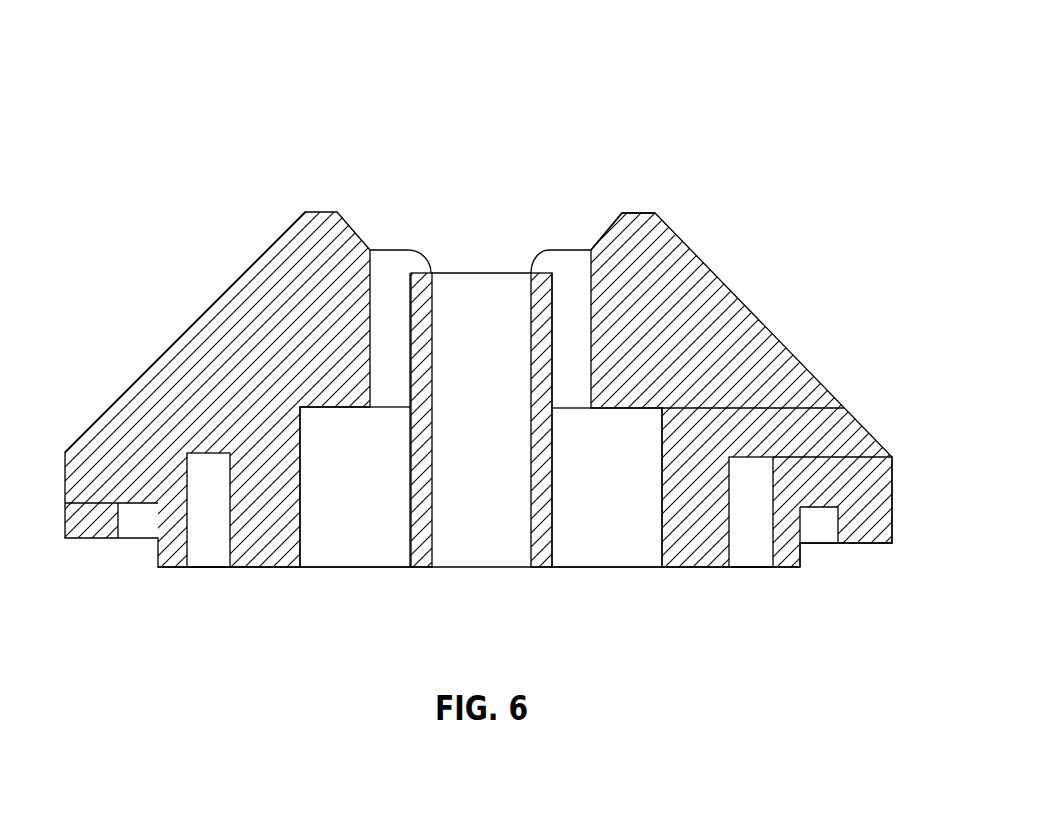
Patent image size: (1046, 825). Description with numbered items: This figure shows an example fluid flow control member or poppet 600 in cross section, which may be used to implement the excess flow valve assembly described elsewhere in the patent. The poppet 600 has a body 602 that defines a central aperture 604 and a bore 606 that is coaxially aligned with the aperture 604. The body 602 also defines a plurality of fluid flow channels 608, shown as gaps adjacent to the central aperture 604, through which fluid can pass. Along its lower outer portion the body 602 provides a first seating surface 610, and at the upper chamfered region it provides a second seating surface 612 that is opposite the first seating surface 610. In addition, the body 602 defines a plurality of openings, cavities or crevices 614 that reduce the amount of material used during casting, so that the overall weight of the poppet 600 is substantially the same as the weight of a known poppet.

The poppet 600 is at (152, 112).
The body 602 is at (762, 360).
The aperture 604 is at (433, 376).
The bore 606 is at (363, 553).
The fluid flow channels 608 is at (395, 262).
The first seating surface 610 is at (857, 543).
The second seating surface 612 is at (608, 230).
The openings, cavities or crevices 614 is at (213, 553).